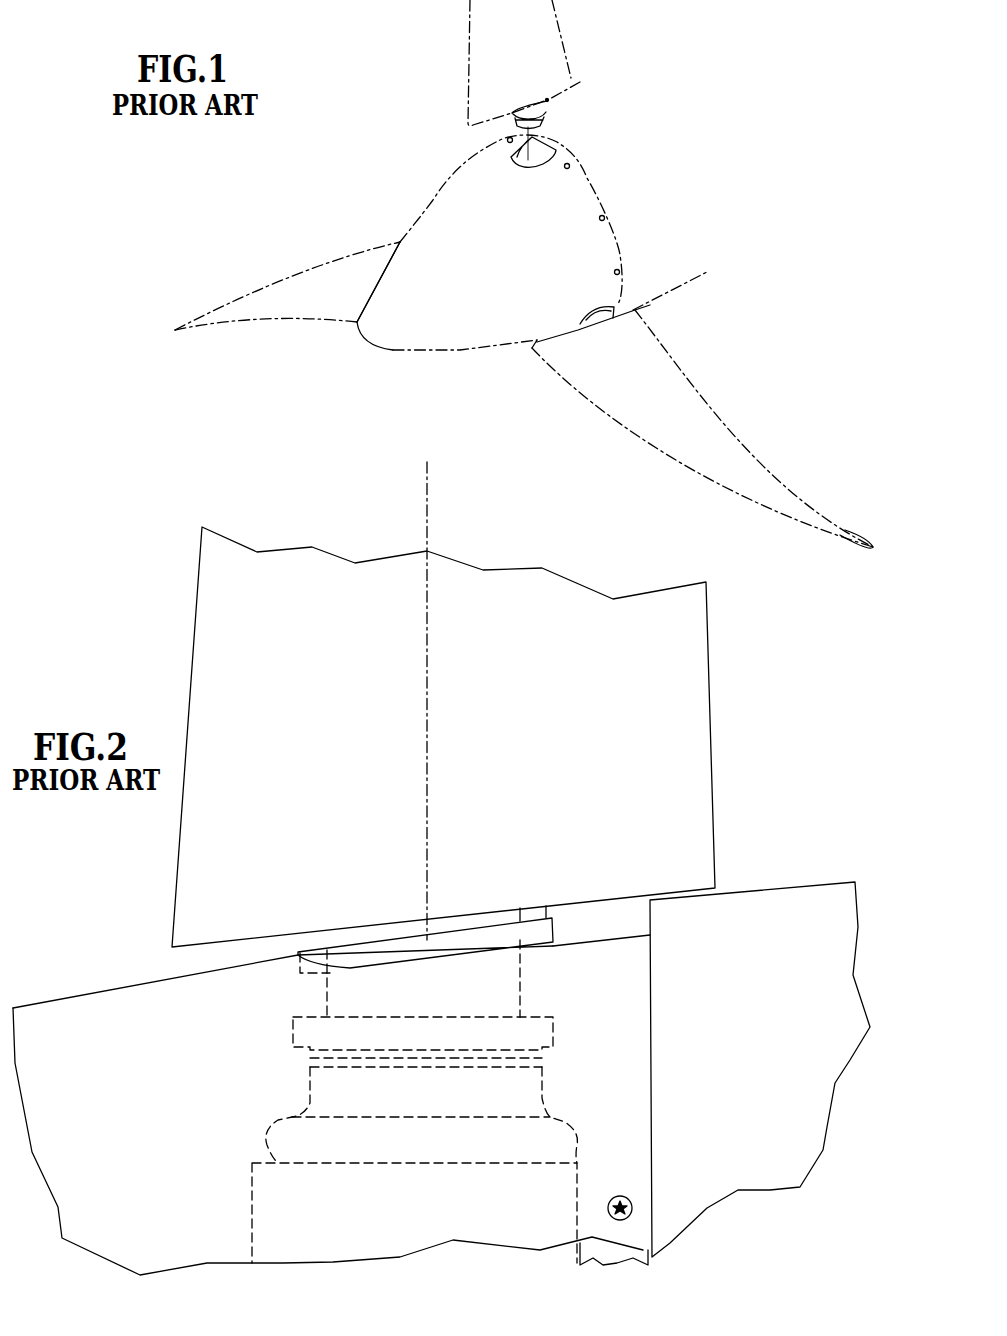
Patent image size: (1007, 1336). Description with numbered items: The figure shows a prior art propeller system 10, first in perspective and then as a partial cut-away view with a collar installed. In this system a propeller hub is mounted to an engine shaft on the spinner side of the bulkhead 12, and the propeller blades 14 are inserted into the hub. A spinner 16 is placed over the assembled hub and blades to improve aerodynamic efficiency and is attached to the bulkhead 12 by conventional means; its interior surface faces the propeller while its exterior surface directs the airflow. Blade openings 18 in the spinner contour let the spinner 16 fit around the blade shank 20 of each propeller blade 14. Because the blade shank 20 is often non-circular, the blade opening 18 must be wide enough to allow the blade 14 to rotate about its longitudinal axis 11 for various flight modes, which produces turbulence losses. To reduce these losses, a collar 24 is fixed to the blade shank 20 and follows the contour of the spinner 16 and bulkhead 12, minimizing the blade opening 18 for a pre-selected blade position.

In FIG. 1, the propeller system 10 is at (365, 120).
In FIG. 2, the propeller system 10 is at (112, 585).
In FIG. 1, the longitudinal axis 11 is at (525, 140).
In FIG. 2, the longitudinal axis 11 is at (428, 478).
In FIG. 1, the bulkhead 12 is at (690, 204).
In FIG. 2, the bulkhead 12 is at (765, 1049).
In FIG. 1, the propeller blade 14 is at (468, 47).
In FIG. 2, the propeller blade 14 is at (300, 732).
In FIG. 1, the spinner 16 is at (420, 243).
In FIG. 2, the spinner 16 is at (105, 1005).
In FIG. 1, the blade opening 18 is at (552, 152).
In FIG. 2, the blade opening 18 is at (636, 947).
In FIG. 1, the blade shank 20 is at (537, 122).
In FIG. 2, the blade shank 20 is at (345, 958).
In FIG. 1, the collar 24 is at (547, 100).
In FIG. 2, the collar 24 is at (540, 918).